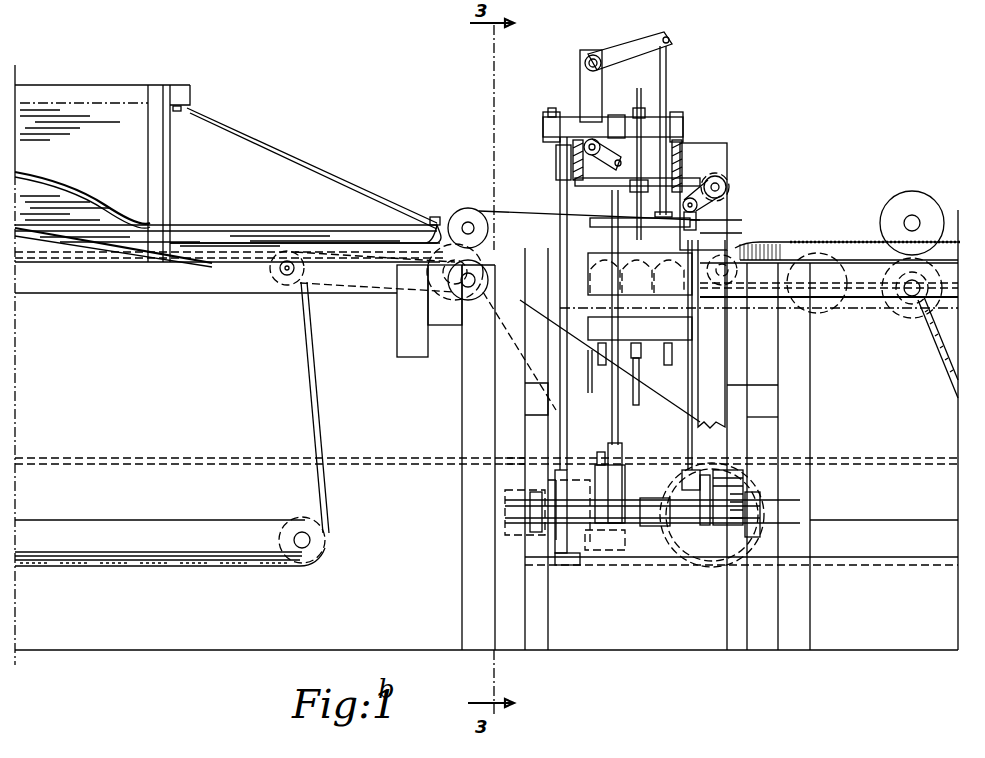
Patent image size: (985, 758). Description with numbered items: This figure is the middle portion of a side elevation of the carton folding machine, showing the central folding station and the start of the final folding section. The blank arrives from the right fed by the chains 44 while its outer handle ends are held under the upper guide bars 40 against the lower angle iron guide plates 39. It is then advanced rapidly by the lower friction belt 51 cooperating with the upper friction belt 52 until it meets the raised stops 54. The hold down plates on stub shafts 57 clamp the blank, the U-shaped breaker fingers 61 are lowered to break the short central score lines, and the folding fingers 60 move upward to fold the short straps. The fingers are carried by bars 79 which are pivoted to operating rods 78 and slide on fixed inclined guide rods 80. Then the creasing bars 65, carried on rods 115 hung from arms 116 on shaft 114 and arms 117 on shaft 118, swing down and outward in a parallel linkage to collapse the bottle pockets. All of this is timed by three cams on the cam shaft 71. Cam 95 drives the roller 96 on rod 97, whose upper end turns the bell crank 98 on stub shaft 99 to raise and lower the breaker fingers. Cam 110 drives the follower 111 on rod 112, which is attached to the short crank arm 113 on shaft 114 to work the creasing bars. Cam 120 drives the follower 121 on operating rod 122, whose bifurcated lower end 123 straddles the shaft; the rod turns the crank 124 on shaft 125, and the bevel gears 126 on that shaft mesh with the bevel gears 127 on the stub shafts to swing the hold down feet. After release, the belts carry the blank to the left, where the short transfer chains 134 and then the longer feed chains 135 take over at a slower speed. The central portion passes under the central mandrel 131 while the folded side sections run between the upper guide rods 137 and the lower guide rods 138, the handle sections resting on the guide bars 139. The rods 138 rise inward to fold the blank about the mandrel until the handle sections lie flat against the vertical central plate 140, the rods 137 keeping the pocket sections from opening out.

The vertical central plate 140 is at (118, 93).
The lower guide rods 138 is at (78, 250).
The upper guide rods 137 is at (228, 232).
The central mandrel 131 is at (303, 215).
The guide bars 139 is at (336, 244).
The short transfer chains 134 is at (372, 290).
The longer feed chains 135 is at (306, 387).
The upper friction belt 52 is at (483, 208).
The lower friction belt 51 is at (512, 300).
The shaft 118 is at (593, 55).
The arms 117 is at (635, 45).
The rods 115 is at (668, 56).
The stub shaft 99 is at (592, 125).
The shaft 114 is at (590, 117).
The short crank arm 113 is at (609, 140).
The arms 116 is at (678, 140).
The bell crank 98 is at (558, 148).
The stub shafts 57 is at (595, 186).
The bevel gears 127 is at (702, 182).
The bevel gears 126 is at (720, 178).
The shaft 125 is at (730, 184).
The crank 124 is at (702, 210).
The creasing bars 65 is at (700, 222).
The U-shaped breaker fingers 61 is at (720, 240).
The folding fingers 60 is at (640, 274).
The bars 79 is at (662, 333).
The operating rods 78 is at (648, 385).
The fixed inclined guide rods 80 is at (670, 366).
The rods or stops 54 is at (588, 368).
The rod 97 is at (561, 348).
The rod 112 is at (620, 428).
The follower or roller 111 is at (600, 452).
The roller or follower 96 is at (569, 480).
The cam 95 is at (582, 566).
The cam 110 is at (606, 552).
The cam shaft 71 is at (670, 520).
The operating rod 122 is at (688, 448).
The bifurcated lower end 123 is at (682, 482).
The follower 121 is at (713, 472).
The cam 120 is at (700, 568).
The lower angle iron guide plates 39 is at (793, 250).
The upper guide bars 40 is at (834, 244).
The chains 44 is at (862, 290).